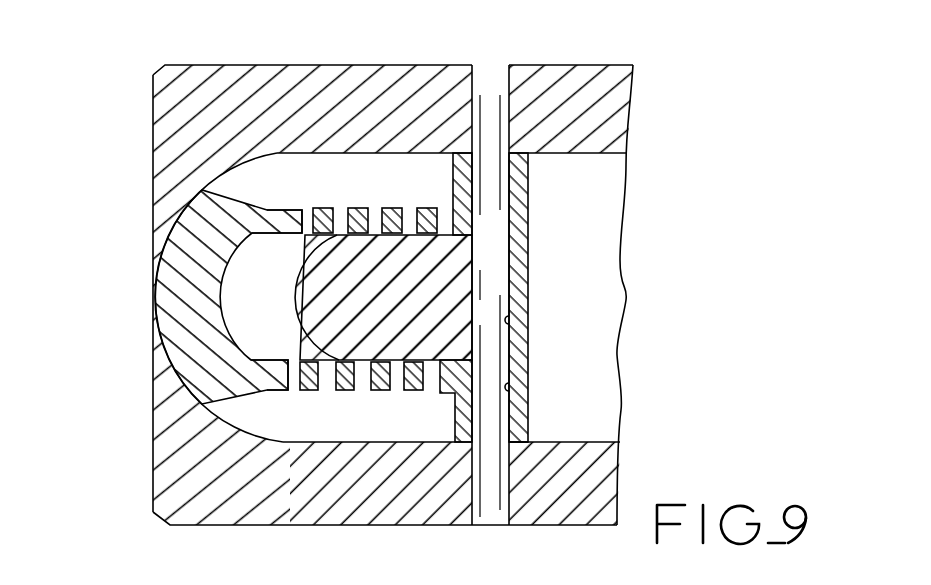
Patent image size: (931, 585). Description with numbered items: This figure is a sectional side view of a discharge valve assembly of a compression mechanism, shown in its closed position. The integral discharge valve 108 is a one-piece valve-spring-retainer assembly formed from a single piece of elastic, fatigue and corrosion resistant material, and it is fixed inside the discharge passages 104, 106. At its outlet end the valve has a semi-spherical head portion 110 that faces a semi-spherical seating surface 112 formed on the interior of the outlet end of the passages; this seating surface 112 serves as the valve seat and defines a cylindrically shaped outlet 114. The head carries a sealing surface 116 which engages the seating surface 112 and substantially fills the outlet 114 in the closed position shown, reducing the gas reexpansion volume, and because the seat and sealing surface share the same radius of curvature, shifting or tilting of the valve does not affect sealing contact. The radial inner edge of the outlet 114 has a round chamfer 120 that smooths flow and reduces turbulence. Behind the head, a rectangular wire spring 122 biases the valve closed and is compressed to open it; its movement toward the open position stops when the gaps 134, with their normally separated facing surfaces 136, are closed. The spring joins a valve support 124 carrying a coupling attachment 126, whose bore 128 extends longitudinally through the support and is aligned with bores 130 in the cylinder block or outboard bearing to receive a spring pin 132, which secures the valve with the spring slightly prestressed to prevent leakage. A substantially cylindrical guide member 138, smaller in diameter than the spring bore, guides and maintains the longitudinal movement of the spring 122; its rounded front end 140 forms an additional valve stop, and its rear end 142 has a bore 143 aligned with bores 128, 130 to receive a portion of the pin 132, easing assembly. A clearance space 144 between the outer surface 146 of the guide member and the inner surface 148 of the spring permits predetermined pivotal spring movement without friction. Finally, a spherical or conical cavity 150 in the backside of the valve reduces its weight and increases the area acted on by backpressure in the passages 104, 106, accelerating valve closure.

The discharge passage 104 is at (627, 167).
The discharge passage 106 is at (627, 167).
The discharge valve 108 is at (587, 247).
The semi-spherical head portion 110 is at (218, 527).
The semi-spherical seating surface 112 is at (175, 203).
The cylindrically shaped outlet 114 is at (157, 350).
The sealing surface 116 is at (160, 340).
The round chamfer 120 is at (160, 235).
The rectangular wire spring 122 is at (385, 393).
The valve support 124 is at (540, 405).
The coupling attachment 126 is at (517, 452).
The bore 128 is at (512, 387).
The bores 130 is at (505, 82).
The spring pin 132 is at (490, 518).
The gaps 134 is at (372, 210).
The facing surfaces 136 is at (445, 205).
The guide member 138 is at (467, 278).
The front end 140 is at (290, 327).
The rear end 142 is at (540, 237).
The bore 143 is at (512, 322).
The clearance space 144 is at (318, 390).
The outer surface 146 is at (345, 355).
The inner surface 148 is at (247, 395).
The cavity 150 is at (267, 207).